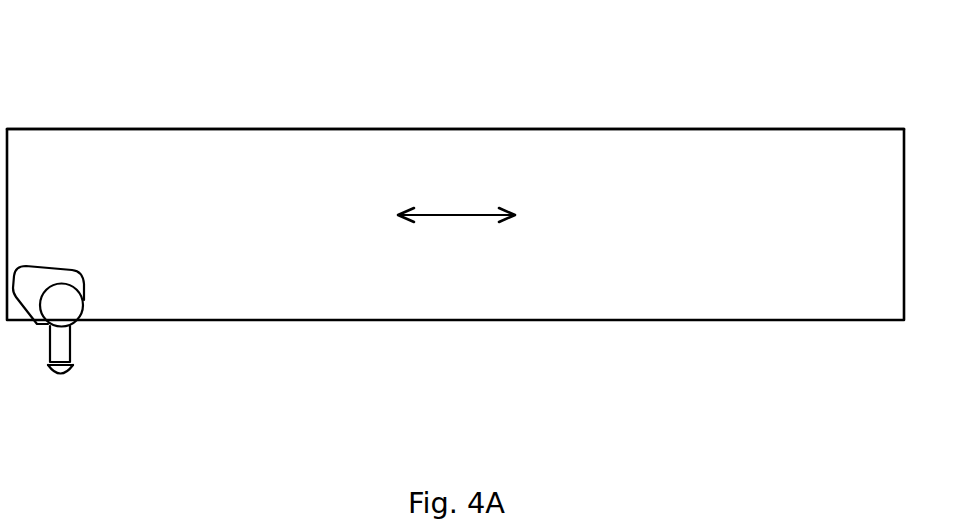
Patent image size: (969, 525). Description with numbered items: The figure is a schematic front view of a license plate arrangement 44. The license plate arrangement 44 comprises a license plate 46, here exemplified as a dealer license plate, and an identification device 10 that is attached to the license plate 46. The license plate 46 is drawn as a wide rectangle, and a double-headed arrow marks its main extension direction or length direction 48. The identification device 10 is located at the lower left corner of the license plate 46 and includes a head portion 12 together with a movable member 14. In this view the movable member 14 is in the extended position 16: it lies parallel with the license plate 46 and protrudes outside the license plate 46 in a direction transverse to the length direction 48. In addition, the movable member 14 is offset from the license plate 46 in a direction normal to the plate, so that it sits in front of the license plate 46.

The license plate arrangement 44 is at (97, 58).
The license plate 46 is at (715, 163).
The length direction 48 is at (456, 197).
The identification device 10 is at (90, 318).
The head portion 12 is at (62, 303).
The movable member 14 is at (60, 345).
The extended position 16 is at (77, 382).